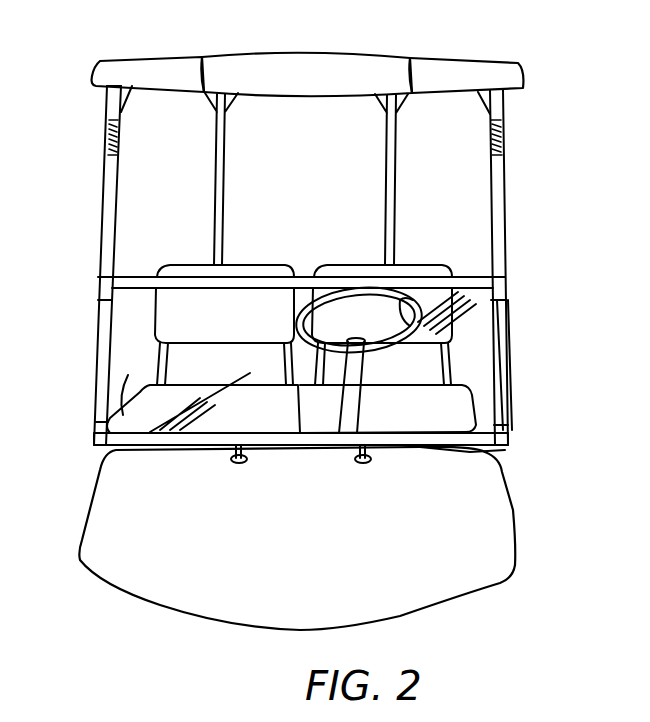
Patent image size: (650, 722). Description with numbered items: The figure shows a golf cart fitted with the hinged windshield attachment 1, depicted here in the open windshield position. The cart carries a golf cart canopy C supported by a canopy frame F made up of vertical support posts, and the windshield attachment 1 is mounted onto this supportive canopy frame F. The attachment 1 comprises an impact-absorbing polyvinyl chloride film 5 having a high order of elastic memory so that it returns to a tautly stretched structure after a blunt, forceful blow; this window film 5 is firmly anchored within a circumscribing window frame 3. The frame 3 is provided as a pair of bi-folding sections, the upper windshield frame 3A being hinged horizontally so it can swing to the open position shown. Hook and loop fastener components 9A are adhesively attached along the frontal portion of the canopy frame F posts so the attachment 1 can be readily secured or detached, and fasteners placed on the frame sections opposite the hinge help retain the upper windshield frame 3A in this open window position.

The golf cart canopy C is at (455, 67).
The canopy frame F is at (101, 226).
The hook and loop fastener component 9A is at (108, 140).
The hinged windshield attachment 1 is at (555, 279).
The window frame 3 is at (96, 361).
The polyvinyl chloride film 5 is at (120, 378).
The upper windshield frame 3A is at (506, 383).